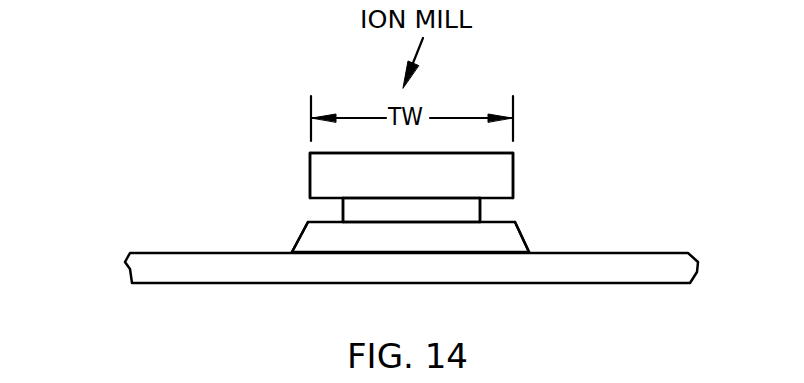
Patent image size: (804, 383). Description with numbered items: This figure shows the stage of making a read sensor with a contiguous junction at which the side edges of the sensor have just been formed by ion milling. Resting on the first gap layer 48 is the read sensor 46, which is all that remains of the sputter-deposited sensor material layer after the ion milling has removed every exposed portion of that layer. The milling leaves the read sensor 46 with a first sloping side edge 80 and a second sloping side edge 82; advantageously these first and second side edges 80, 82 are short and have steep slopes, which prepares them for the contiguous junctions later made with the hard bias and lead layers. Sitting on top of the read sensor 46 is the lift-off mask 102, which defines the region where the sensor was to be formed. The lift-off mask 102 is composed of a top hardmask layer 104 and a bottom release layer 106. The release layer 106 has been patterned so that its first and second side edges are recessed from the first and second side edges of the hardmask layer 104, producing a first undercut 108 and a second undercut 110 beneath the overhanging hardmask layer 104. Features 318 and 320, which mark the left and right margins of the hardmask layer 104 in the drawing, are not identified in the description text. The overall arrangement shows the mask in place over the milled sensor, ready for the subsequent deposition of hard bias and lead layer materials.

The read sensor 46 is at (317, 240).
The first gap layer 48 is at (142, 265).
The first sloping side edge 80 is at (297, 249).
The second sloping side edge 82 is at (530, 249).
The lift-off mask 102 is at (508, 101).
The hardmask layer 104 is at (322, 168).
The release layer 106 is at (486, 209).
The first undercut 108 is at (332, 211).
The second undercut 110 is at (488, 214).
The first side wall of hardmask 318 is at (309, 175).
The second side wall of hardmask 320 is at (515, 168).